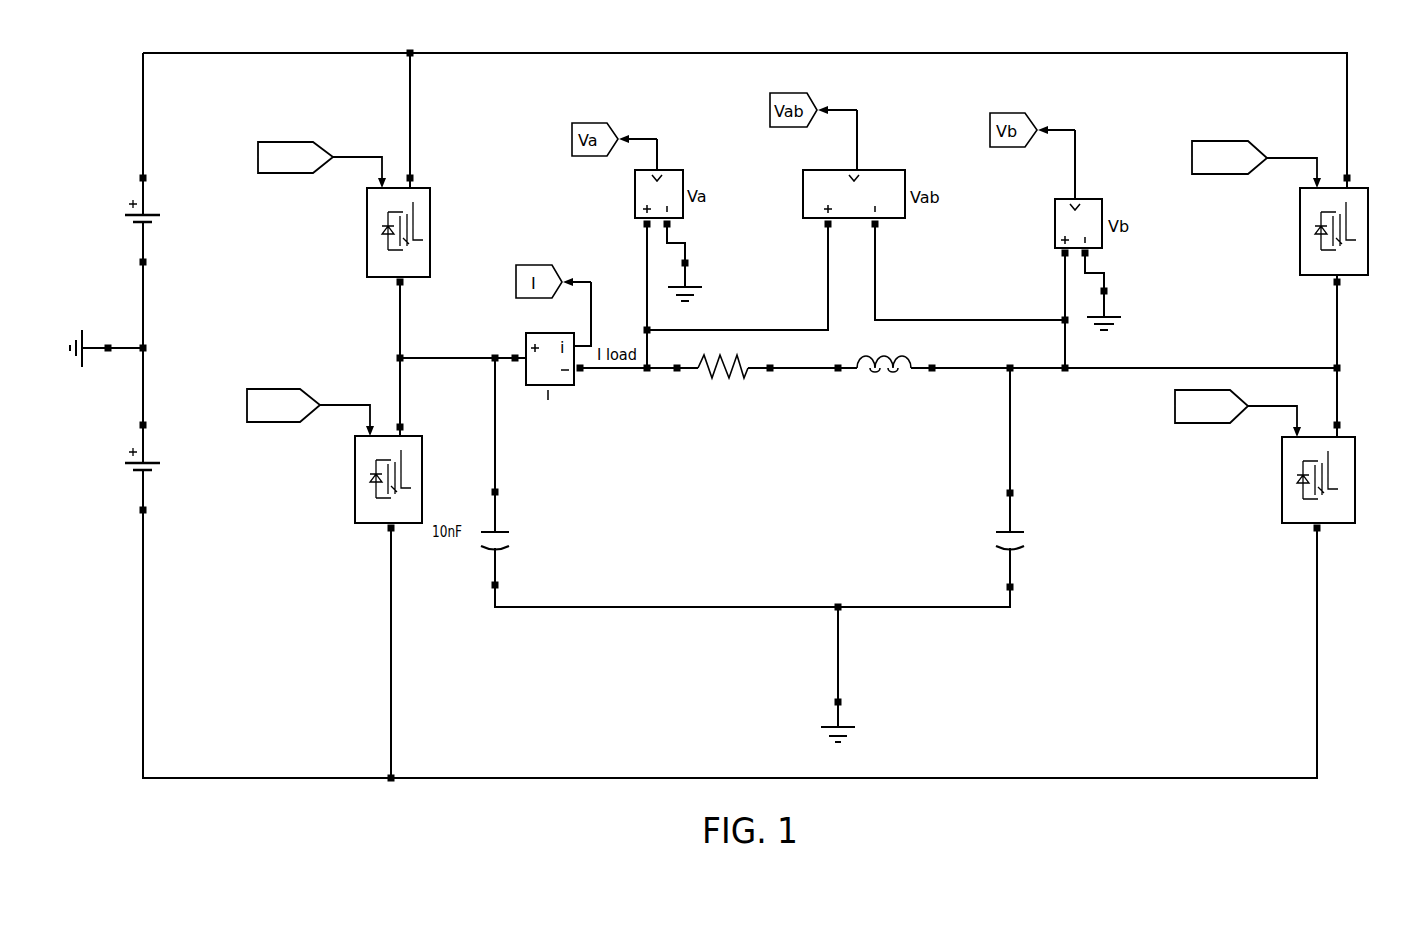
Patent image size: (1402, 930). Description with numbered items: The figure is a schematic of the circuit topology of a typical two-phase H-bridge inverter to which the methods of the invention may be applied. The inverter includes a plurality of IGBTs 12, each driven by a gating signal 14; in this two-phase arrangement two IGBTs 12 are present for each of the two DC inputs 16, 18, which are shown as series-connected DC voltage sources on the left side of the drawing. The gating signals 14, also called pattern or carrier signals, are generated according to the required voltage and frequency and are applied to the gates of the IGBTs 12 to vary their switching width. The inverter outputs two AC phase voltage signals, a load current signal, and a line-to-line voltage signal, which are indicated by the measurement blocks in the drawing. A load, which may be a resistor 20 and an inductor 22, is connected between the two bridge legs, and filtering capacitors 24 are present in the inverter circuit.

The IGBT 12 is at (366, 246).
The gating signal 14 is at (281, 142).
The DC input 16 is at (125, 217).
The DC input 18 is at (125, 466).
The resistor 20 is at (725, 380).
The inductor 22 is at (882, 378).
The capacitor 24 is at (502, 540).